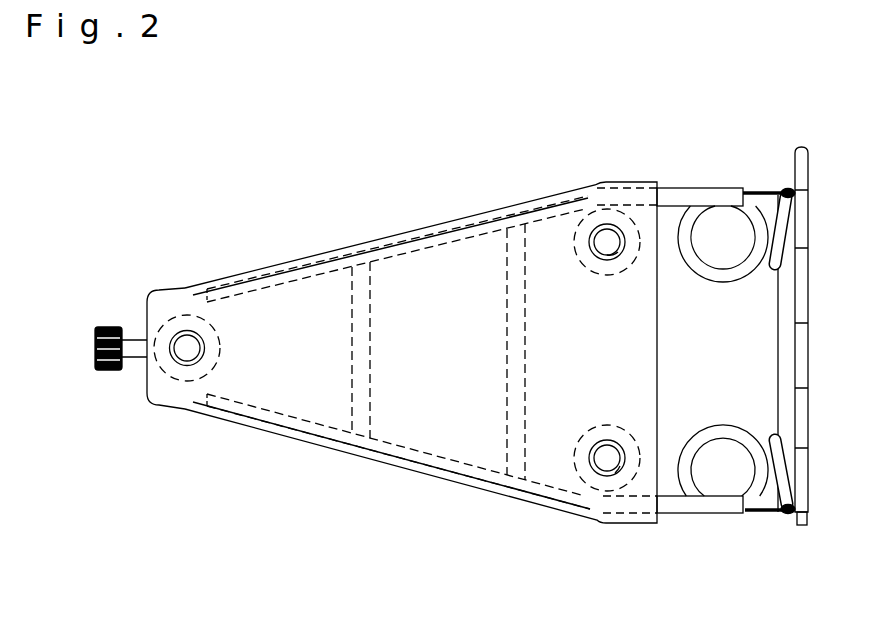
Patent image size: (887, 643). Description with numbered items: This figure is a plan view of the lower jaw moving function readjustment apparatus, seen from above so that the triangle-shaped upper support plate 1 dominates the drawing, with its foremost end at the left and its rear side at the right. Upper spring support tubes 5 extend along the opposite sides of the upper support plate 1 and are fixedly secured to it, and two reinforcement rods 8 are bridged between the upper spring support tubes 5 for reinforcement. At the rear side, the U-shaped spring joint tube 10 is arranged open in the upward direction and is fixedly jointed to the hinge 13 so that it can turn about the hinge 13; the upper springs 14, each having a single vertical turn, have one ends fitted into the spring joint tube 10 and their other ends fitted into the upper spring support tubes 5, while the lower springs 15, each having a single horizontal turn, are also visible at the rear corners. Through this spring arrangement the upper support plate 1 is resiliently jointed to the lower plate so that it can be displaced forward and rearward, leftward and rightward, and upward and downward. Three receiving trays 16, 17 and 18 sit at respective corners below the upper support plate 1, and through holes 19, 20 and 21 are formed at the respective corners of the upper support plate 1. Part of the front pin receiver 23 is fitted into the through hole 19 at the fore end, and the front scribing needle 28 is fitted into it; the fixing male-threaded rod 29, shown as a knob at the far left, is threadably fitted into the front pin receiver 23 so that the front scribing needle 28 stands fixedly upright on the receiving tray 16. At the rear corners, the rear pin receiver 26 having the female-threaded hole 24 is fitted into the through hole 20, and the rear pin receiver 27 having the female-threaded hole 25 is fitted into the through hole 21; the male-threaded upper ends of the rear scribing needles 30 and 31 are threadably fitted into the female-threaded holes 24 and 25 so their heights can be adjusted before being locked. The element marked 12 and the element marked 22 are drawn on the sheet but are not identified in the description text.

The upper support plate 1 is at (195, 297).
The upper spring support tubes 5 is at (690, 192).
The reinforcement rods 8 is at (353, 288).
The U-shaped spring joint tube 10 is at (778, 345).
The mounting strip 12 is at (808, 162).
The hinge 13 is at (808, 352).
The upper springs 14 is at (762, 191).
The lower springs 15 is at (728, 279).
The receiving tray 16 is at (162, 297).
The receiving tray 17 is at (588, 498).
The receiving tray 18 is at (600, 215).
The through hole 19 is at (195, 370).
The through hole 20 is at (592, 470).
The through hole 21 is at (620, 228).
The bushing 22 is at (181, 363).
The front pin receiver 23 is at (167, 367).
The female-threaded hole 24 is at (617, 452).
The female-threaded hole 25 is at (618, 252).
The rear pin receiver 26 is at (615, 473).
The rear pin receiver 27 is at (593, 231).
The front scribing needle 28 is at (188, 340).
The fixing male-threaded rod 29 is at (107, 325).
The rear scribing needle 30 is at (607, 476).
The rear scribing needle 31 is at (608, 237).